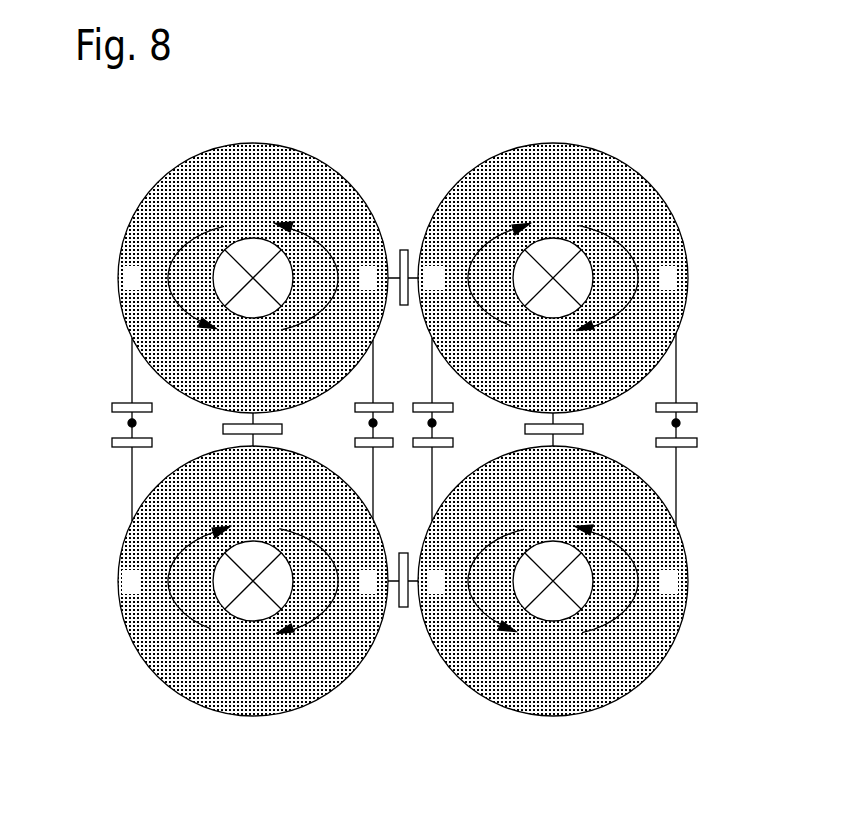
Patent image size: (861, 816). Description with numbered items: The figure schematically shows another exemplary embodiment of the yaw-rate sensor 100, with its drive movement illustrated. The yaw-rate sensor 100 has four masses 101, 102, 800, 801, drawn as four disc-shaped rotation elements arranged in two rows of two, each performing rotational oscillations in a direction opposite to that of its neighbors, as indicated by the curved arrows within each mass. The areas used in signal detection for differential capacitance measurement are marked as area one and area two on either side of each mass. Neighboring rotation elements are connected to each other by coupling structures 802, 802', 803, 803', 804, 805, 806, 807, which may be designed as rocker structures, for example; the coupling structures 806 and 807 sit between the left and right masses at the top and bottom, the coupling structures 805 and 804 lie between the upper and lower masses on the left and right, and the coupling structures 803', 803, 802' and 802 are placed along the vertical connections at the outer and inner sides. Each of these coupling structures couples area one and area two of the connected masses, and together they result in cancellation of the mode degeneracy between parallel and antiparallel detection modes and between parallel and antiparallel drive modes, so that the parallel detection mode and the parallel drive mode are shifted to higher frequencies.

The yaw-rate sensor 100 is at (666, 173).
The mass 101 is at (262, 157).
The mass 102 is at (262, 700).
The mass 800 is at (562, 157).
The mass 801 is at (562, 697).
The coupling structure 802 is at (721, 429).
The coupling structure 802' is at (419, 307).
The coupling structure 803 is at (369, 554).
The coupling structure 803' is at (87, 429).
The coupling structure 804 is at (583, 428).
The coupling structure 805 is at (223, 429).
The coupling structure 806 is at (404, 250).
The coupling structure 807 is at (403, 607).